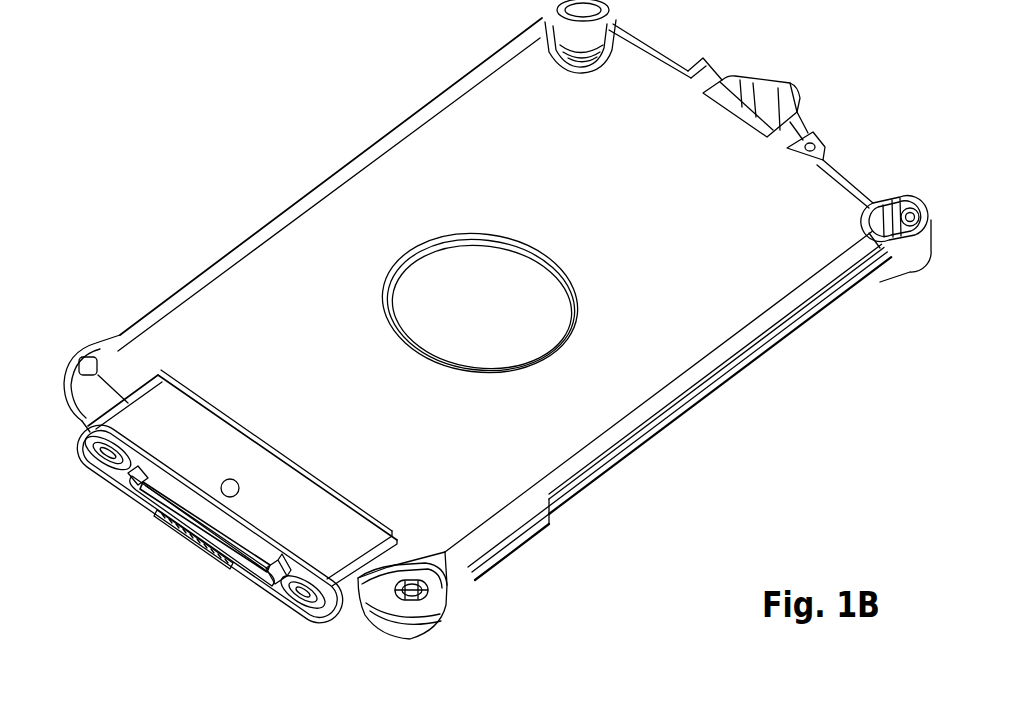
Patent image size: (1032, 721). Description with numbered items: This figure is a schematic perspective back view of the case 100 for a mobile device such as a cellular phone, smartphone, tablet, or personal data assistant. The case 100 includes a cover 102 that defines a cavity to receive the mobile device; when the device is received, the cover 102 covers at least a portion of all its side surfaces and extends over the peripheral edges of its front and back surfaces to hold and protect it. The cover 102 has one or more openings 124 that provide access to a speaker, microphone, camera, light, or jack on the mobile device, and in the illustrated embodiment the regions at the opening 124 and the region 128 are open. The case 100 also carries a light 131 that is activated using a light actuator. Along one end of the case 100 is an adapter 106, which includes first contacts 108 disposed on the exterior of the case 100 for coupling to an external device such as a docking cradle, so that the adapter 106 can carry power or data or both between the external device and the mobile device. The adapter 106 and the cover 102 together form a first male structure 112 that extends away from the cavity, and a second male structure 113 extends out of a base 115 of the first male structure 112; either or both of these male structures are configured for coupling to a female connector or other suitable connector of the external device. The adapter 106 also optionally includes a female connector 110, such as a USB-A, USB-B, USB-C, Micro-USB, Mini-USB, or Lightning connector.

The case 100 is at (497, 328).
The cover 102 is at (662, 424).
The adapter 106 is at (227, 563).
The first contacts 108 is at (180, 543).
The female connector 110 is at (100, 478).
The first male structure 112 is at (325, 618).
The second male structure 113 is at (130, 503).
The base 115 is at (85, 466).
The opening 124 is at (579, 66).
The region 128 is at (461, 315).
The light 131 is at (227, 480).